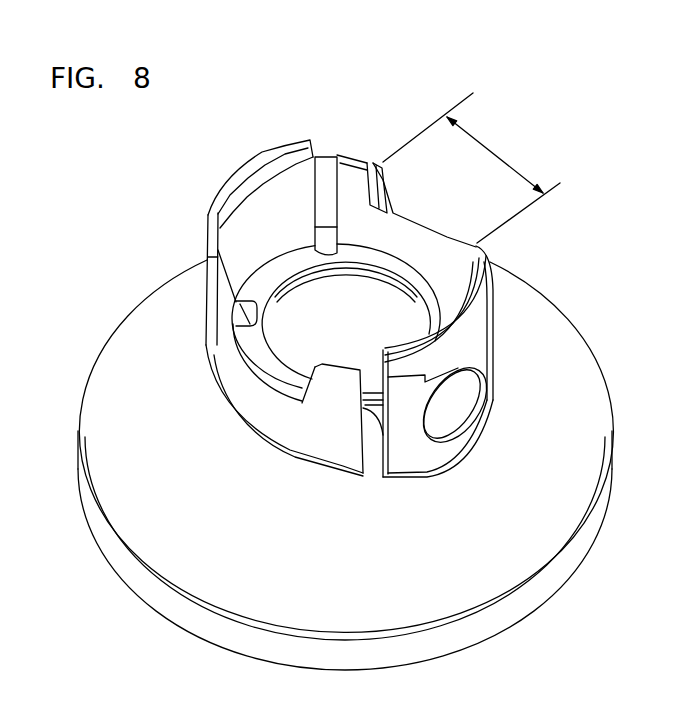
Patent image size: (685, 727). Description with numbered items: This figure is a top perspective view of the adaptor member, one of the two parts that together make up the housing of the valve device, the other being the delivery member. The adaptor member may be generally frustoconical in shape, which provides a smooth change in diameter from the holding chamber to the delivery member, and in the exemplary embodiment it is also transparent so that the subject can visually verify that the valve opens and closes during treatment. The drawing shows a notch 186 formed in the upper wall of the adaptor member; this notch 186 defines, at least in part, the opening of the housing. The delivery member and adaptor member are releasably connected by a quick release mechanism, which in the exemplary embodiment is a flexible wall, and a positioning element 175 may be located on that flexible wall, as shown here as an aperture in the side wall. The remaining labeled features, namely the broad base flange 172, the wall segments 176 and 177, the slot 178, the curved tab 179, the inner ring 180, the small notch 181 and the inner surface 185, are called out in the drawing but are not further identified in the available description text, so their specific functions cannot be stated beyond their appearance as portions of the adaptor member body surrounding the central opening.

The base flange 172 is at (563, 367).
The positioning element 175 is at (460, 410).
The right wall segment 176 is at (400, 435).
The front wall segment 177 is at (332, 425).
The rear slot 178 is at (313, 168).
The curved tab 179 is at (262, 152).
The inner ring 180 is at (277, 365).
The notch 181 is at (248, 313).
The inner bore surface 185 is at (367, 335).
The notch 186 is at (490, 151).